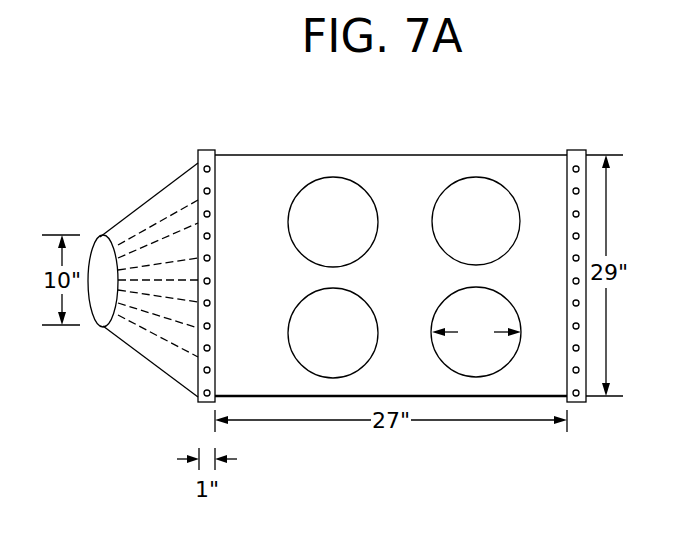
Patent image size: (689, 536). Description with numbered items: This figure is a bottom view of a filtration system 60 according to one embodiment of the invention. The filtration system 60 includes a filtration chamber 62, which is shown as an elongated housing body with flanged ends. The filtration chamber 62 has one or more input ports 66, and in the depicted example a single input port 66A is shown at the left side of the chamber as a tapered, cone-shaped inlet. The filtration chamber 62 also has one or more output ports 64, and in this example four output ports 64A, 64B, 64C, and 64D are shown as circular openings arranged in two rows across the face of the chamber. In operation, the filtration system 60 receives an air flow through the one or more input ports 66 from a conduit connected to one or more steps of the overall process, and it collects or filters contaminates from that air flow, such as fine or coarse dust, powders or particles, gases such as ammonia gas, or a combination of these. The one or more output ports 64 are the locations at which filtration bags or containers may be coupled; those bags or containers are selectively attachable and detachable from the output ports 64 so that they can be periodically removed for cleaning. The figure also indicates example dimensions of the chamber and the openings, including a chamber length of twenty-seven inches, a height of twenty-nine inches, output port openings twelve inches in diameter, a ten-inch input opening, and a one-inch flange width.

The filtration system 60 is at (142, 166).
The filtration chamber 62 is at (468, 155).
The output ports 64 is at (262, 190).
The output port 64A is at (333, 177).
The output port 64B is at (504, 183).
The output port 64C is at (289, 332).
The output port 64D is at (433, 312).
The input ports 66 is at (105, 359).
The input port 66A is at (158, 370).